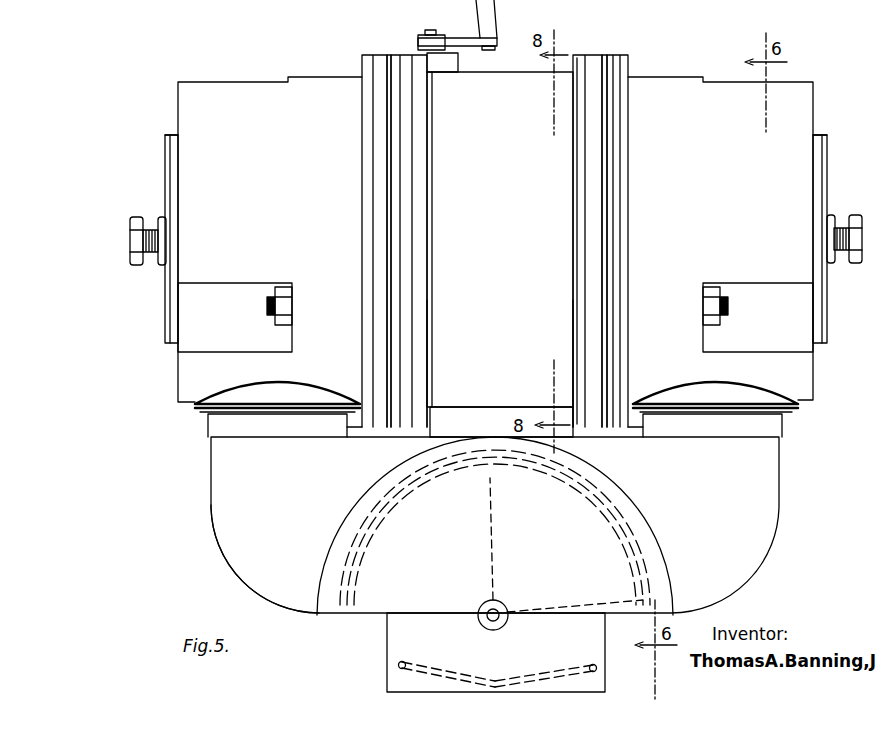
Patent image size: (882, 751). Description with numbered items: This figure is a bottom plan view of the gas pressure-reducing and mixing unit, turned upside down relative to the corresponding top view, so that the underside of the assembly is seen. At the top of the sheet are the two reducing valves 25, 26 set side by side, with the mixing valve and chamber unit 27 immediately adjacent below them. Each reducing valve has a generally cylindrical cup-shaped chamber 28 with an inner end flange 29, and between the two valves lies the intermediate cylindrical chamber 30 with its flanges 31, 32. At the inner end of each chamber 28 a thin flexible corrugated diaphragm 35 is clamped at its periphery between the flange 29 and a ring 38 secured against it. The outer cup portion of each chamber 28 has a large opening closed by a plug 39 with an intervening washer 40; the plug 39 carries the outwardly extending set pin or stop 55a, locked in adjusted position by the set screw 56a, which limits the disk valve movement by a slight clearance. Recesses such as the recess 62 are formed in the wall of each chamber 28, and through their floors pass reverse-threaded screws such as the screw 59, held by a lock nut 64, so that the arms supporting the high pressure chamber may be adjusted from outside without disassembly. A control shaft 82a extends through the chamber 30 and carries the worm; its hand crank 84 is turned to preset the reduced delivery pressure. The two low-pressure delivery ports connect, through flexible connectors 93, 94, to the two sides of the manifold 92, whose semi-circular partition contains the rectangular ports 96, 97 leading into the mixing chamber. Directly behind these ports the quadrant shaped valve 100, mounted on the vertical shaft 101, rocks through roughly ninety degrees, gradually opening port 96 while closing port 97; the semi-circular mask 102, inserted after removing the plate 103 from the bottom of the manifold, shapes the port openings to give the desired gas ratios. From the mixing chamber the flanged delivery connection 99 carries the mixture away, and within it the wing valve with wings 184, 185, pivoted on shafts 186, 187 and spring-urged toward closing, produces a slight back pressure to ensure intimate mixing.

The reducing valve 25 is at (255, 75).
The reducing valve 26 is at (677, 71).
The mixing valve and chamber unit 27 is at (236, 580).
The cylindrical chamber 28 is at (495, 150).
The inner end flange 29 is at (386, 55).
The intermediate cylindrical chamber 30 is at (508, 67).
The flange 31 is at (577, 58).
The flange 32 is at (417, 399).
The thin flexible corrugated plate or diaphragm 35 is at (394, 55).
The ring 38 is at (598, 419).
The plug 39 is at (165, 145).
The washer 40 is at (172, 135).
The set pin or stop 55a is at (150, 264).
The set screw 56a is at (160, 217).
The screw 59 is at (270, 305).
The recess 62 is at (162, 327).
The lock screw or nut 64 is at (278, 322).
The control shaft 82a is at (434, 423).
The hand crank 84 is at (478, 13).
The manifold 92 is at (495, 525).
The flexible connector 93 is at (790, 417).
The flexible connector 94 is at (210, 416).
The rectangular port 96 is at (648, 537).
The rectangular port 97 is at (380, 518).
The delivery connection or pipe 99 is at (385, 636).
The quadrant shaped valve 100 is at (600, 530).
The vertical shaft 101 is at (508, 610).
The semi-circular mask 102 is at (588, 497).
The plate 103 is at (600, 507).
The wing 184 is at (555, 674).
The wing 185 is at (439, 676).
The shaft 186 is at (597, 668).
The shaft 187 is at (398, 666).